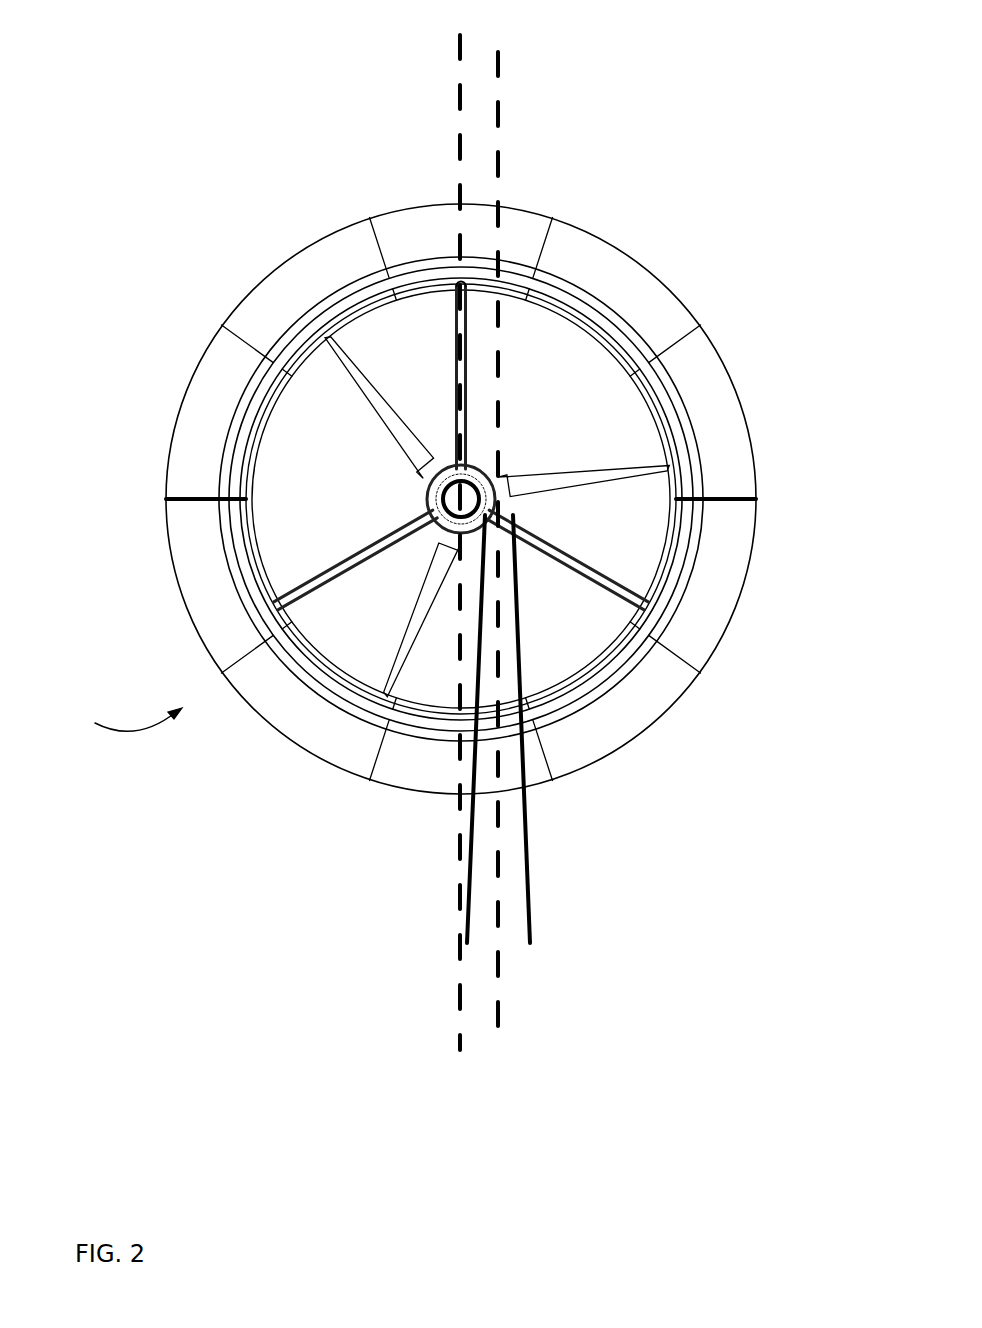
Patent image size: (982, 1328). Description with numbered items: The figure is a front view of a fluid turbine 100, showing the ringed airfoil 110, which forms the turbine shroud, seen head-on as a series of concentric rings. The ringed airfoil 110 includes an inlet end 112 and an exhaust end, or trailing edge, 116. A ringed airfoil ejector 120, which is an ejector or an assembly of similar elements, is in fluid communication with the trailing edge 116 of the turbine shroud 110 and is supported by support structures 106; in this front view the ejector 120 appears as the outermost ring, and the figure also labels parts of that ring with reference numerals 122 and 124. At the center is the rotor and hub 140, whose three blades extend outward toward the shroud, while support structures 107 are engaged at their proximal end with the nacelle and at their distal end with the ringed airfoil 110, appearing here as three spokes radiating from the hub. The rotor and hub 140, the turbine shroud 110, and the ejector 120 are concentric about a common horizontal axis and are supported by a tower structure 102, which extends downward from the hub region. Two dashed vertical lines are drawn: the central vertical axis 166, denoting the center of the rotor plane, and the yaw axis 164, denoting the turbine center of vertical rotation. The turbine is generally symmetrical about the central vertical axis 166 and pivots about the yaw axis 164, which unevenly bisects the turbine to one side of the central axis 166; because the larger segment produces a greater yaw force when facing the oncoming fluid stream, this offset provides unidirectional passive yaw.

The fluid turbine 100 is at (137, 40).
The tower structure 102 is at (512, 840).
The support structures 106 is at (202, 497).
The support structures 107 is at (335, 562).
The ringed airfoil 110 is at (115, 715).
The inlet end 112 is at (366, 692).
The exhaust end 116 is at (604, 327).
The ringed airfoil ejector 120 is at (520, 223).
The shroud inner rim 122 is at (661, 377).
The shroud outer surface 124 is at (754, 458).
The rotor 140 is at (353, 375).
The yaw axis 164 is at (498, 970).
The central vertical axis 166 is at (458, 40).